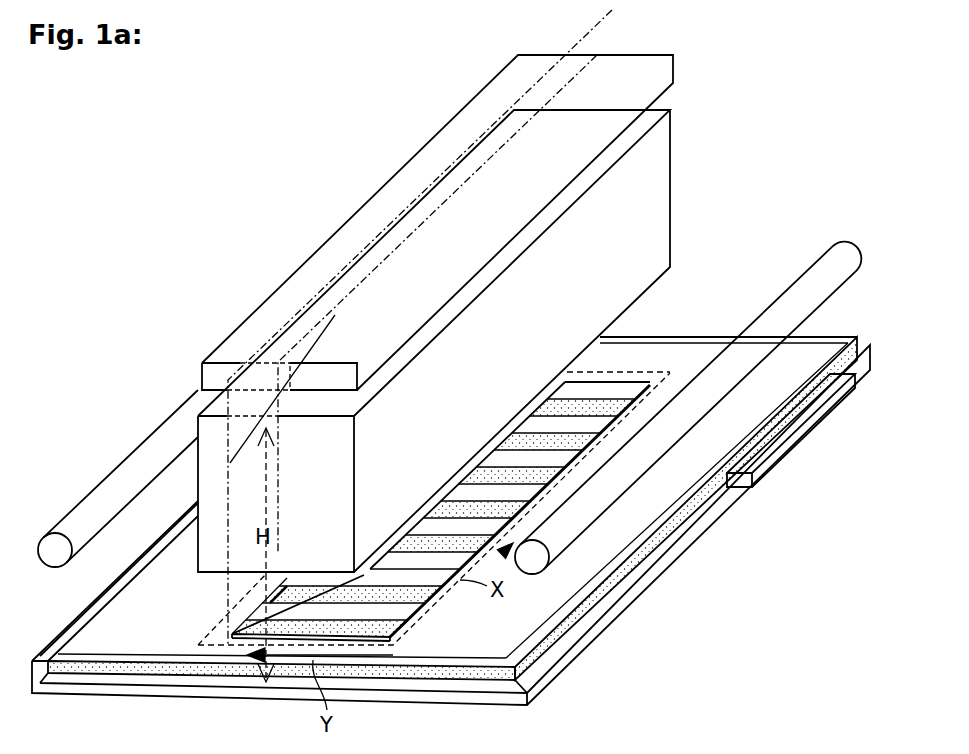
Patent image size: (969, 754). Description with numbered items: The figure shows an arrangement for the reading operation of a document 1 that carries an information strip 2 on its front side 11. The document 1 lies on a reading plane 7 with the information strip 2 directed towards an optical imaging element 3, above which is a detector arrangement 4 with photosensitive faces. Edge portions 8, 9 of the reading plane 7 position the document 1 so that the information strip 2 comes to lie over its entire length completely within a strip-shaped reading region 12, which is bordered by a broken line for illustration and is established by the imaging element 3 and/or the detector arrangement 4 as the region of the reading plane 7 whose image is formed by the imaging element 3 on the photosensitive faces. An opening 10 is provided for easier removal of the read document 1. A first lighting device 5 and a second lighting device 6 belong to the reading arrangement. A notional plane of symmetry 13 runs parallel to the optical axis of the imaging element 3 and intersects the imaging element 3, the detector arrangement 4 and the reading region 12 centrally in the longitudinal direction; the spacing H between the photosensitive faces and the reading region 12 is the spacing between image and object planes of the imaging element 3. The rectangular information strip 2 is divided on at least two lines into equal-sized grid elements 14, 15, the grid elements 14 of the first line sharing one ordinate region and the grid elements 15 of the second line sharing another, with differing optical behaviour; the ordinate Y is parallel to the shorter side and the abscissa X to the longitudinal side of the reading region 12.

The document 1 is at (490, 644).
The information strip 2 is at (245, 605).
The optical imaging element 3 is at (655, 185).
The detector arrangement 4 is at (415, 175).
The first lighting device 5 is at (800, 290).
The second lighting device 6 is at (132, 462).
The reading plane 7 is at (603, 612).
The edge portion of the reading plane 8 is at (62, 650).
The edge portion of the reading plane 9 is at (828, 357).
The opening 10 is at (722, 550).
The front side 11 is at (520, 623).
The reading region 12 is at (217, 645).
The plane of symmetry 13 is at (283, 327).
The grid elements of the first line 14 is at (280, 630).
The grid elements of the second line 15 is at (352, 632).